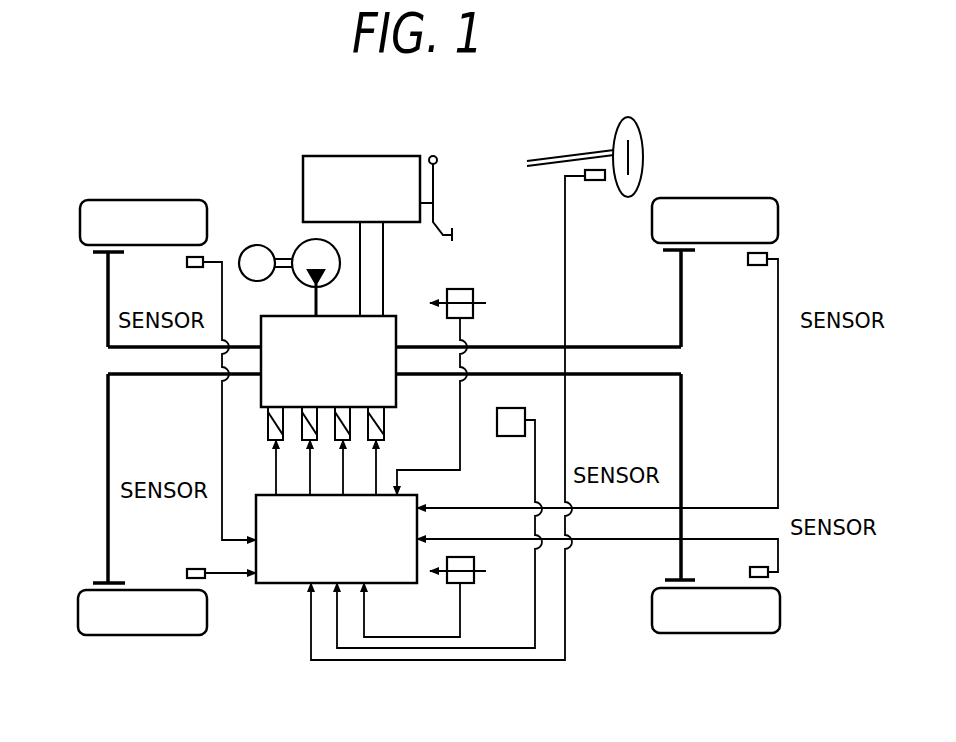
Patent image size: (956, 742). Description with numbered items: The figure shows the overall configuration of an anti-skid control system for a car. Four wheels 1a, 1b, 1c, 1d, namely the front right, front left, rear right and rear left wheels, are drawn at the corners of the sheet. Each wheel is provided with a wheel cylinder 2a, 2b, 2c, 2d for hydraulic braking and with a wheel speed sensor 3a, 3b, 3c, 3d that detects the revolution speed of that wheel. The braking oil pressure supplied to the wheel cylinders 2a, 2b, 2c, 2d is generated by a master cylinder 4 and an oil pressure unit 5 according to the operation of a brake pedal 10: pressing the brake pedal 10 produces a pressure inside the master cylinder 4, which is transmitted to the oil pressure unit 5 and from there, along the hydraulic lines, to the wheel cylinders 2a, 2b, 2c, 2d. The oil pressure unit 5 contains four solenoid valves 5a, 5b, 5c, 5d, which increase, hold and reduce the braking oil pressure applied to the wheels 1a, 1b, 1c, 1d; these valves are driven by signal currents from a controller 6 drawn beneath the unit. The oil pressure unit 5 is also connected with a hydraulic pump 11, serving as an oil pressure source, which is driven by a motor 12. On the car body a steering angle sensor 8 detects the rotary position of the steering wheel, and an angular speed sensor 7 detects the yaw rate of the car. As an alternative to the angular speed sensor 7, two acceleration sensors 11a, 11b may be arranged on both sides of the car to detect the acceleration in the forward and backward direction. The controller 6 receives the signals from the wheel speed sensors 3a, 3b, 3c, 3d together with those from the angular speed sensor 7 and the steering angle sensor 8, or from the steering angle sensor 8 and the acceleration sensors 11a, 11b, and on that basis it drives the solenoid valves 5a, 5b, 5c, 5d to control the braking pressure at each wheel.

The wheel 1a is at (95, 199).
The wheel 1b is at (92, 636).
The wheel 1c is at (763, 197).
The wheel 1d is at (668, 634).
The wheel cylinder 2a is at (97, 255).
The wheel cylinder 2b is at (101, 580).
The wheel cylinder 2c is at (688, 254).
The wheel cylinder 2d is at (672, 580).
The wheel speed sensor 3a is at (198, 268).
The wheel speed sensor 3b is at (193, 567).
The wheel speed sensor 3c is at (760, 267).
The wheel speed sensor 3d is at (770, 566).
The master cylinder 4 is at (303, 172).
The oil pressure unit 5 is at (397, 394).
The solenoid valve 5a is at (268, 437).
The solenoid valve 5b is at (300, 438).
The solenoid valve 5c is at (334, 438).
The solenoid valve 5d is at (384, 437).
The controller 6 is at (276, 585).
The angular speed sensor 7 is at (515, 437).
The steering angle sensor 8 is at (598, 181).
The brake pedal 10 is at (437, 178).
The hydraulic pump 11 is at (308, 241).
The acceleration sensor 11a is at (473, 295).
The acceleration sensor 11b is at (462, 584).
The motor 12 is at (253, 246).